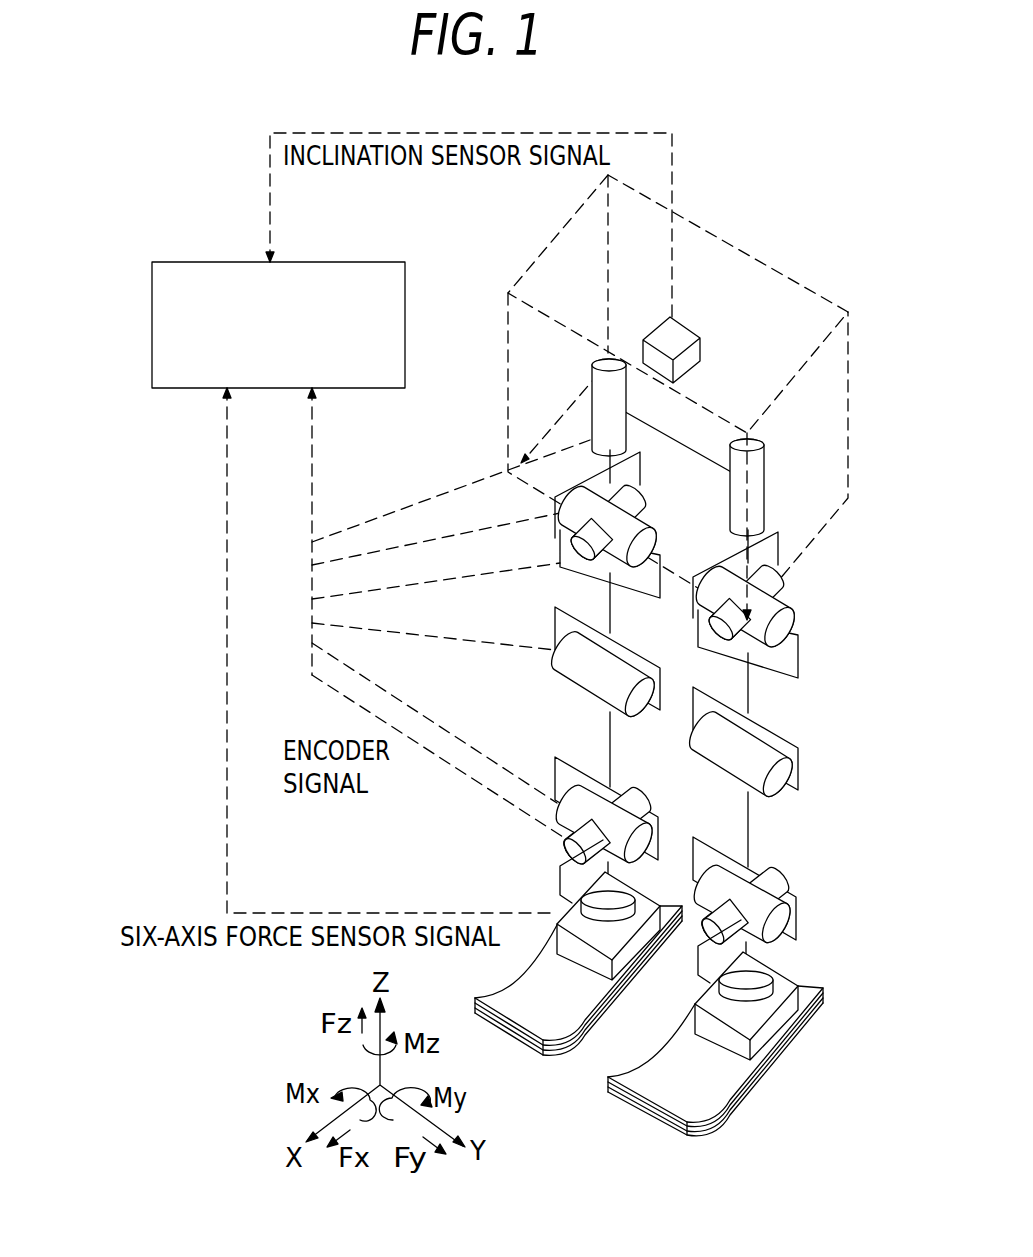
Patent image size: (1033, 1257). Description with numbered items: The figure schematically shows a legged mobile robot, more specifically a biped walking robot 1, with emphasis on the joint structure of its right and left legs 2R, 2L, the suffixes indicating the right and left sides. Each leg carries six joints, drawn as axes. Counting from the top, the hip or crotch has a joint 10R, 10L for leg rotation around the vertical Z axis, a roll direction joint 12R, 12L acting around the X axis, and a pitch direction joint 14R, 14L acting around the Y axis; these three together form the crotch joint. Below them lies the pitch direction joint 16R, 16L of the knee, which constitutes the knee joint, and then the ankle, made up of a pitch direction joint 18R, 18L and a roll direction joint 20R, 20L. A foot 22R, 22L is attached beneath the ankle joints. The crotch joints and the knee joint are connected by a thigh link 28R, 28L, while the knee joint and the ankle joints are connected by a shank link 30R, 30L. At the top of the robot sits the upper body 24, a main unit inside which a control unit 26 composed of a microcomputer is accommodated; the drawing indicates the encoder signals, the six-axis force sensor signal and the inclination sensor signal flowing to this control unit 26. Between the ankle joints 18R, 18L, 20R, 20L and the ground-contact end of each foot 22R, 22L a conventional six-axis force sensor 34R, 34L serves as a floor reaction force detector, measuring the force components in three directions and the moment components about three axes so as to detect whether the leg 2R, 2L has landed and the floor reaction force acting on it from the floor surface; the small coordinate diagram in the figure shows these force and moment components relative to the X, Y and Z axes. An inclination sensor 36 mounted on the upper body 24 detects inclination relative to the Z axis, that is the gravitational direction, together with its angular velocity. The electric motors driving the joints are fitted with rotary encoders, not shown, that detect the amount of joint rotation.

The biped walking robot 1 is at (663, 669).
The right leg 2R is at (578, 731).
The left leg 2L is at (749, 801).
The crotch joint for leg rotation 10R is at (627, 443).
The crotch joint for leg rotation 10L is at (775, 487).
The roll direction joint of the crotch 12R is at (640, 497).
The roll direction joint of the crotch 12L is at (795, 588).
The pitch direction joint of the crotch 14R is at (652, 538).
The pitch direction joint of the crotch 14L is at (781, 606).
The pitch direction joint of the knee 16R is at (636, 708).
The pitch direction joint of the knee 16L is at (770, 768).
The pitch direction joint of the ankle 18R is at (615, 870).
The pitch direction joint of the ankle 18L is at (779, 951).
The roll direction joint of the ankle 20R is at (642, 790).
The roll direction joint of the ankle 20L is at (778, 892).
The foot 22R is at (562, 1032).
The foot 22L is at (707, 1103).
The upper body 24 is at (742, 240).
The control unit 26 is at (370, 262).
The thigh link 28R is at (611, 610).
The thigh link 28L is at (771, 661).
The shank link 30R is at (610, 740).
The shank link 30L is at (787, 829).
The six-axis force sensor 34R is at (598, 928).
The six-axis force sensor 34L is at (735, 1019).
The inclination sensor 36 is at (690, 340).